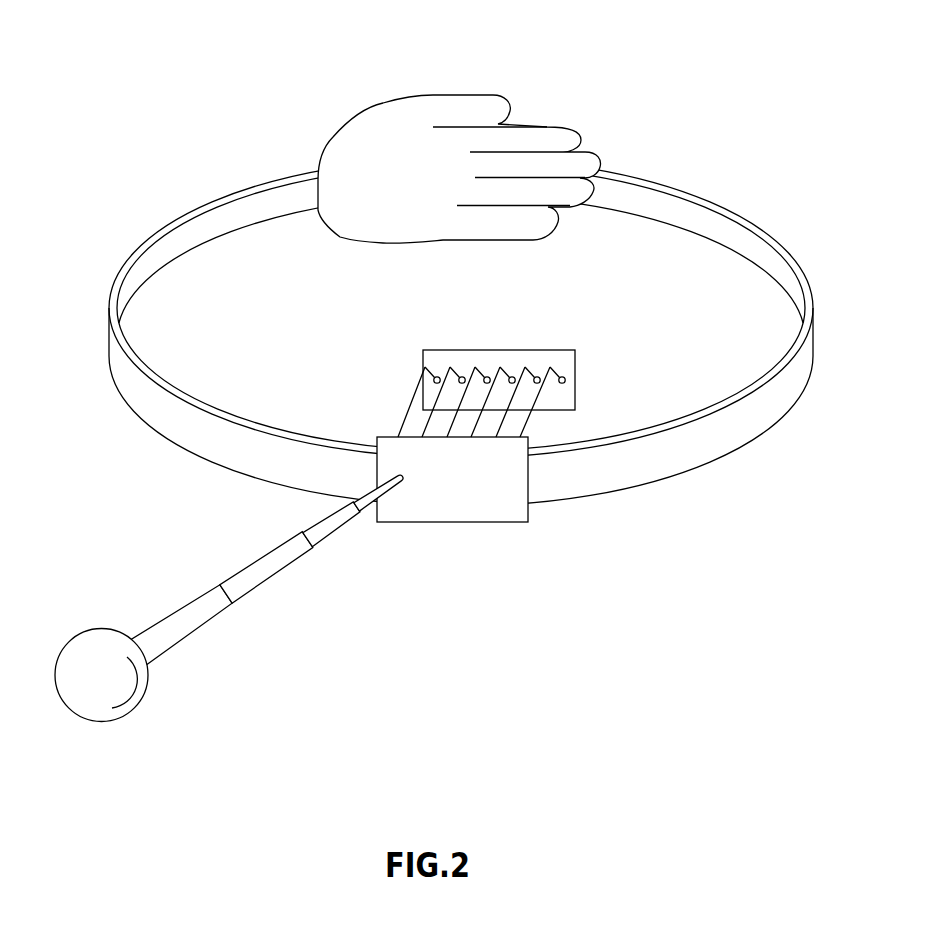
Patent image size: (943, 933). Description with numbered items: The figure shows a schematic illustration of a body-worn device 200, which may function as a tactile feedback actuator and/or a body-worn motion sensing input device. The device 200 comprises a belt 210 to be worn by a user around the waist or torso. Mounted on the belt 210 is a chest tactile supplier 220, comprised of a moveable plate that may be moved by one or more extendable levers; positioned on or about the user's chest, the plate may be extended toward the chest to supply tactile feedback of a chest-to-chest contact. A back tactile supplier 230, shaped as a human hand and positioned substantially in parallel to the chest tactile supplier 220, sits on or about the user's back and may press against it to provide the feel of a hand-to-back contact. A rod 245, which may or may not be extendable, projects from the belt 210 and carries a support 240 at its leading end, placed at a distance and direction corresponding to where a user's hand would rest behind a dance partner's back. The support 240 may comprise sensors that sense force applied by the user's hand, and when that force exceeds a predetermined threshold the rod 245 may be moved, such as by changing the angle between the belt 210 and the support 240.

The device 200 is at (434, 368).
The belt 210 is at (707, 198).
The chest tactile supplier 220 is at (484, 497).
The back tactile supplier 230 is at (545, 127).
The support 240 is at (118, 627).
The rod 245 is at (258, 573).